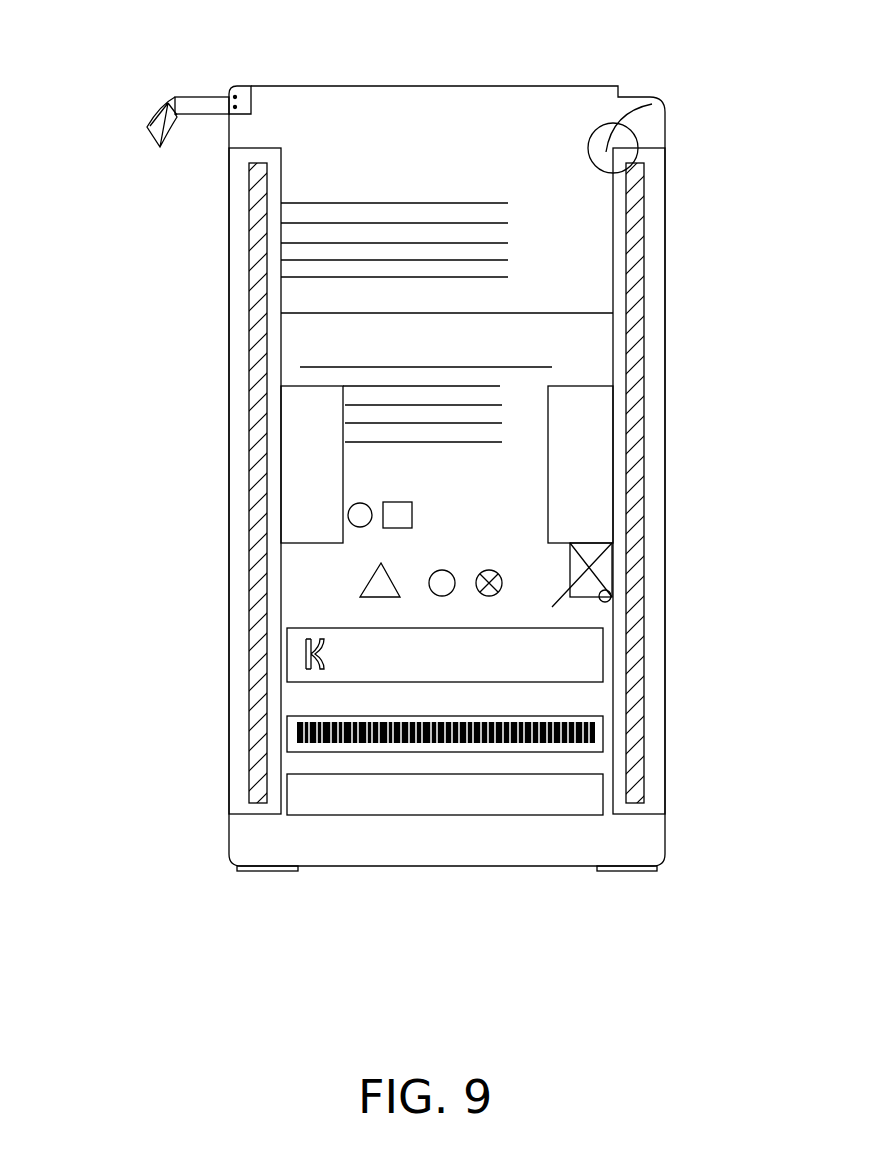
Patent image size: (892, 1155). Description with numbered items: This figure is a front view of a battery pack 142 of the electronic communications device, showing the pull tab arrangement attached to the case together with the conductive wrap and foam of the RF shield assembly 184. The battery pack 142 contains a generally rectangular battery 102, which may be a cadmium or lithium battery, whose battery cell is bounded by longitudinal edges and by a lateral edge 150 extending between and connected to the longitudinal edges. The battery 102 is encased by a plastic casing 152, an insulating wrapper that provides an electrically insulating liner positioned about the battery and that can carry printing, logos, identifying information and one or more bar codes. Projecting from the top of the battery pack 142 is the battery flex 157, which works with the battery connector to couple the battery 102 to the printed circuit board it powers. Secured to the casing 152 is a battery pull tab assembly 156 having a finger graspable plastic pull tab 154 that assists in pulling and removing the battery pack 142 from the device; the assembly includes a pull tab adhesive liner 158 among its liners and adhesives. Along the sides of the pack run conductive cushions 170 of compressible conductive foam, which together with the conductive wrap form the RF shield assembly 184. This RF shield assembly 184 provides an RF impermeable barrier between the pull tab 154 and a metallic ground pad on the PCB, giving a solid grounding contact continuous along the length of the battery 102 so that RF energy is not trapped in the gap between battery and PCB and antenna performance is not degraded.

The battery 102 is at (652, 104).
The battery pack 142 is at (238, 86).
The lateral edge 150 is at (443, 840).
The plastic casing 152 is at (250, 868).
The pull tab 154 is at (317, 428).
The battery pull tab assembly 156 is at (312, 543).
The battery flex 157 is at (181, 96).
The pull tab adhesive liner 158 is at (150, 122).
The conductive cushion 170 is at (258, 357).
The RF shield assembly 184 is at (240, 257).